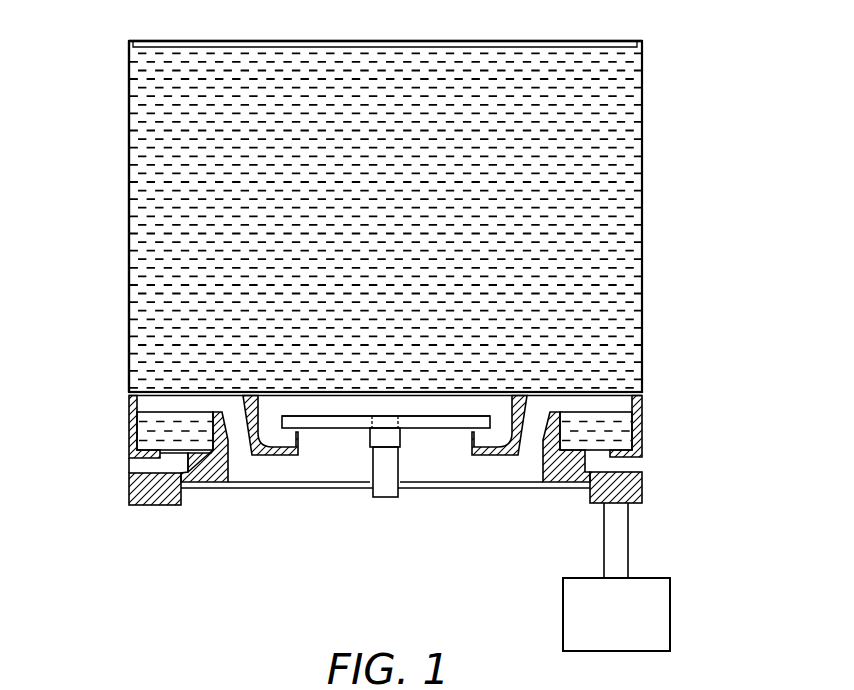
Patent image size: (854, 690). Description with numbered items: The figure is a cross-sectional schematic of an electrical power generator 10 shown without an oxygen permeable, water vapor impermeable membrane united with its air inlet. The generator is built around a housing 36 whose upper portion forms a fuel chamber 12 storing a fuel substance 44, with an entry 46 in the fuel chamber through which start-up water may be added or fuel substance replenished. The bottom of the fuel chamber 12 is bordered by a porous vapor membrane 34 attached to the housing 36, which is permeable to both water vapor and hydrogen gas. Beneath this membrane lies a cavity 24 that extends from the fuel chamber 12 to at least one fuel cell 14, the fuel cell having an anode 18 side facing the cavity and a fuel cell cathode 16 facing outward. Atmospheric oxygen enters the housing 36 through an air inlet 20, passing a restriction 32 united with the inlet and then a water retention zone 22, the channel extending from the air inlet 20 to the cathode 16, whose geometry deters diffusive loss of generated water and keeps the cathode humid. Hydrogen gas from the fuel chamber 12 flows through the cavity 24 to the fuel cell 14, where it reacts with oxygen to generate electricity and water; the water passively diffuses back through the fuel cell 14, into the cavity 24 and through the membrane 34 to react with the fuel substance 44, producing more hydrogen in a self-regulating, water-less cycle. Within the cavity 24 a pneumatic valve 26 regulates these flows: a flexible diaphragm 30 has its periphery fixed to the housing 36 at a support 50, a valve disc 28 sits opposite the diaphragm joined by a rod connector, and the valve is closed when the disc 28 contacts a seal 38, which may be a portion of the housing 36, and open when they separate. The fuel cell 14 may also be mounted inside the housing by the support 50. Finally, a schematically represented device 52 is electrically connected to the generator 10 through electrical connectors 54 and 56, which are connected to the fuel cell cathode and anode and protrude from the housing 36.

The electrical power generator 10 is at (582, 33).
The fuel chamber 12 is at (635, 105).
The fuel cell 14 is at (130, 412).
The fuel cell cathode 16 is at (600, 462).
The anode 18 is at (623, 397).
The air inlet 20 is at (645, 462).
The water retention zone 22 is at (153, 467).
The cavity 24 is at (417, 457).
The valve 26 is at (367, 457).
The valve disc 28 is at (331, 420).
The flexible diaphragm 30 is at (243, 488).
The restriction 32 is at (129, 461).
The porous vapor membrane 34 is at (462, 412).
The housing 36 is at (127, 212).
The seal 38 is at (495, 457).
The fuel substance 44 is at (597, 190).
The entry 46 is at (383, 37).
The support 50 is at (151, 505).
The device 52 is at (662, 613).
The electrical connector 54 is at (604, 545).
The electrical connector 56 is at (630, 545).